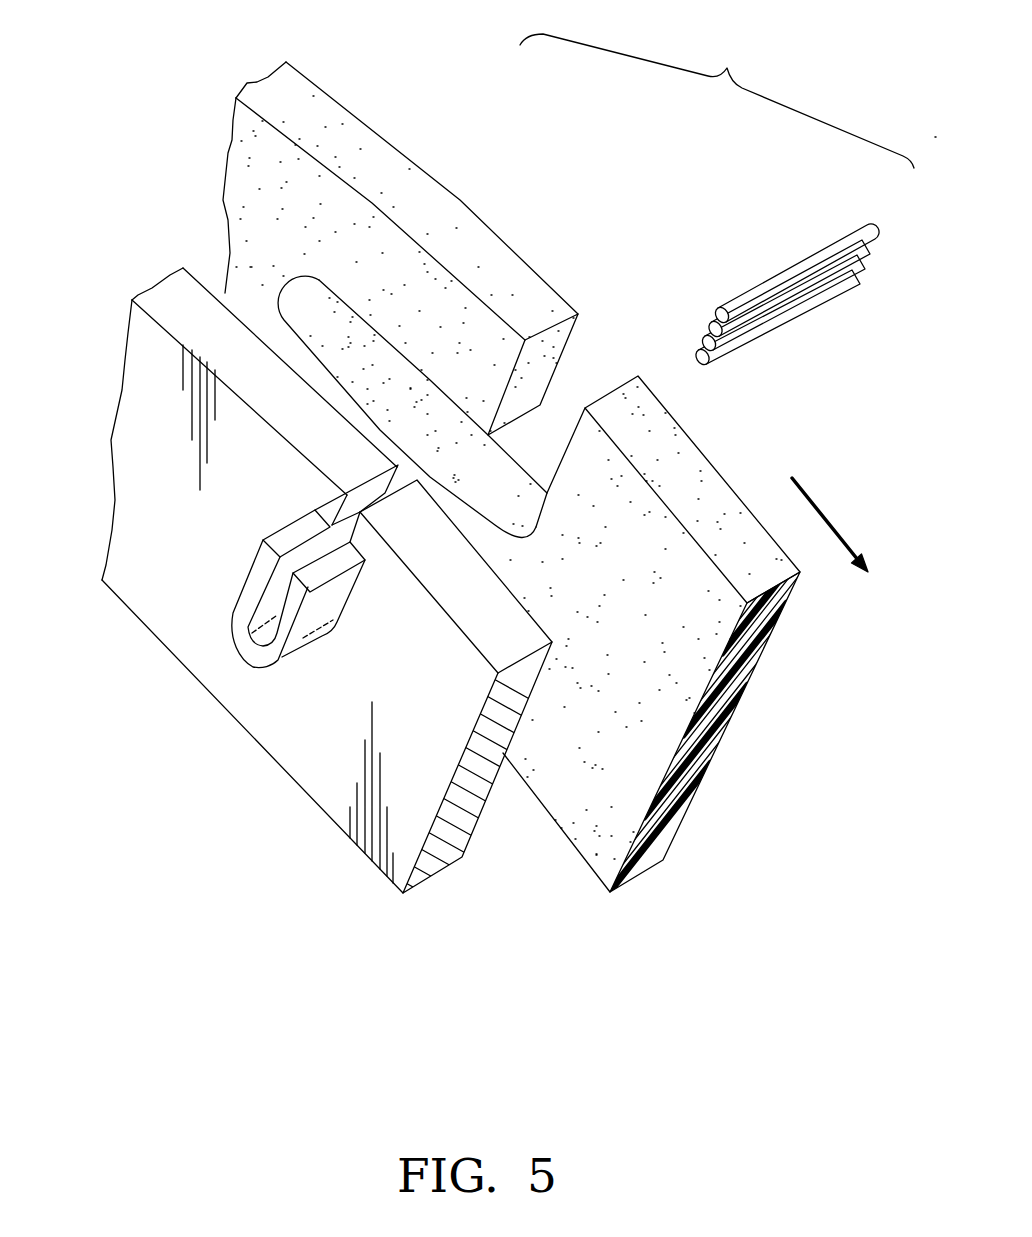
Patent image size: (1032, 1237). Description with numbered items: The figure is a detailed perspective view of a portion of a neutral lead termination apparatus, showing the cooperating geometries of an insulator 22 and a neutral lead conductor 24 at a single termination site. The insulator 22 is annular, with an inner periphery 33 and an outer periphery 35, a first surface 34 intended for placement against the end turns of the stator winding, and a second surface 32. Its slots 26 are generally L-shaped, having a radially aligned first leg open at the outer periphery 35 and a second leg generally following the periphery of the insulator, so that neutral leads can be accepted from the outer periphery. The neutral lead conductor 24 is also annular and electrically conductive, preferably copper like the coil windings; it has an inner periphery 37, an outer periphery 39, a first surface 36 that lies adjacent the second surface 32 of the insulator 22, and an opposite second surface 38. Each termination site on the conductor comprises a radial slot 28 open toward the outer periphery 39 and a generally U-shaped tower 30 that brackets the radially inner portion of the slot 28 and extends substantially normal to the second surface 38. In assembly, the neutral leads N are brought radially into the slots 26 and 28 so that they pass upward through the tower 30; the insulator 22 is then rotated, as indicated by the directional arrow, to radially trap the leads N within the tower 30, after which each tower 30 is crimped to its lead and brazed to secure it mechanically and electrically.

The insulator 22 is at (359, 233).
The neutral lead conductor 24 is at (300, 626).
The slots 26 is at (570, 604).
The radial slot 28 is at (305, 553).
The tower 30 is at (253, 667).
The second surface 32 is at (253, 170).
The inner periphery 33 is at (590, 870).
The first surface 34 is at (500, 235).
The outer periphery 35 is at (703, 492).
The first surface 36 is at (462, 858).
The inner periphery 37 is at (257, 725).
The second surface 38 is at (310, 743).
The outer periphery 39 is at (500, 608).
The neutral leads N is at (798, 268).